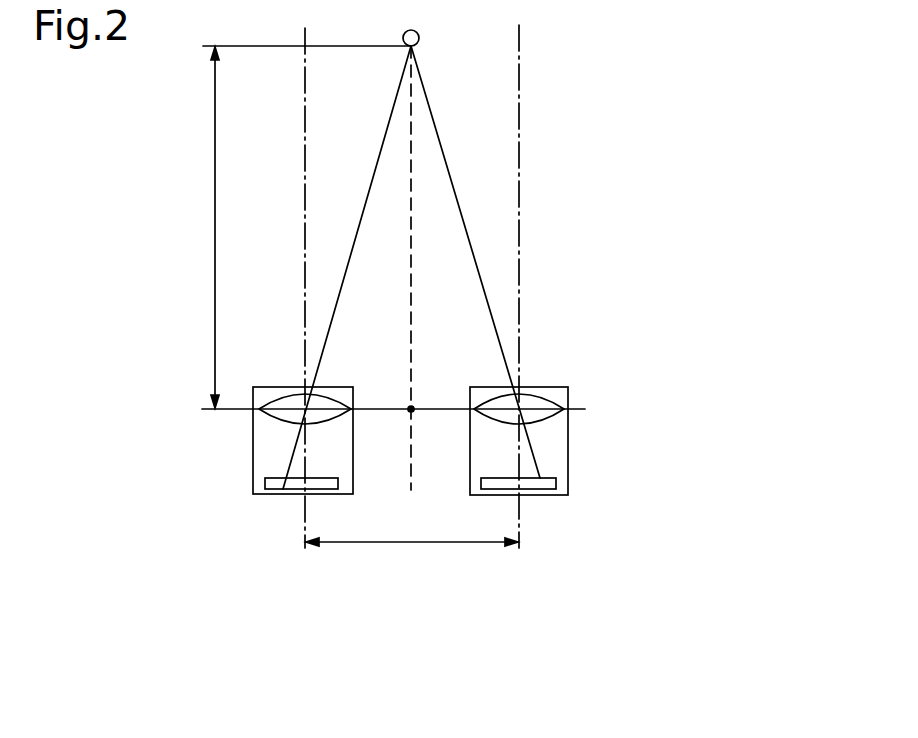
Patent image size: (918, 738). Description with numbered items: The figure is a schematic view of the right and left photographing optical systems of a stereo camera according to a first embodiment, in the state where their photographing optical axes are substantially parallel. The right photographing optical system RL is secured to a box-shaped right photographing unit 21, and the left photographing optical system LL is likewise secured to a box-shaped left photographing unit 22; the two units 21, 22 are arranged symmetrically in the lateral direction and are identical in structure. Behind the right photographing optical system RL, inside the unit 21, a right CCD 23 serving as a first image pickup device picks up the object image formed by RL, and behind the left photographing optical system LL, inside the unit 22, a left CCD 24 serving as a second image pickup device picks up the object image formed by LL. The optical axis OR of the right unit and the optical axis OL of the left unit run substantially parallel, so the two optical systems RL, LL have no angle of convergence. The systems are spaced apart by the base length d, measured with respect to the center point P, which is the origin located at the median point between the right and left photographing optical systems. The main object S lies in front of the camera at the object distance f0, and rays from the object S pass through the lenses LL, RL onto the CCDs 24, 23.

The right photographing unit 21 is at (570, 445).
The left photographing unit 22 is at (253, 448).
The right CCD 23 is at (538, 490).
The left CCD 24 is at (283, 489).
The main object S is at (419, 38).
The center point P is at (409, 412).
The left optical axis OL is at (305, 108).
The right optical axis OR is at (519, 128).
The left photographing optical system LL is at (285, 399).
The right photographing optical system RL is at (537, 399).
The base length d is at (412, 528).
The object distance f0 is at (201, 227).